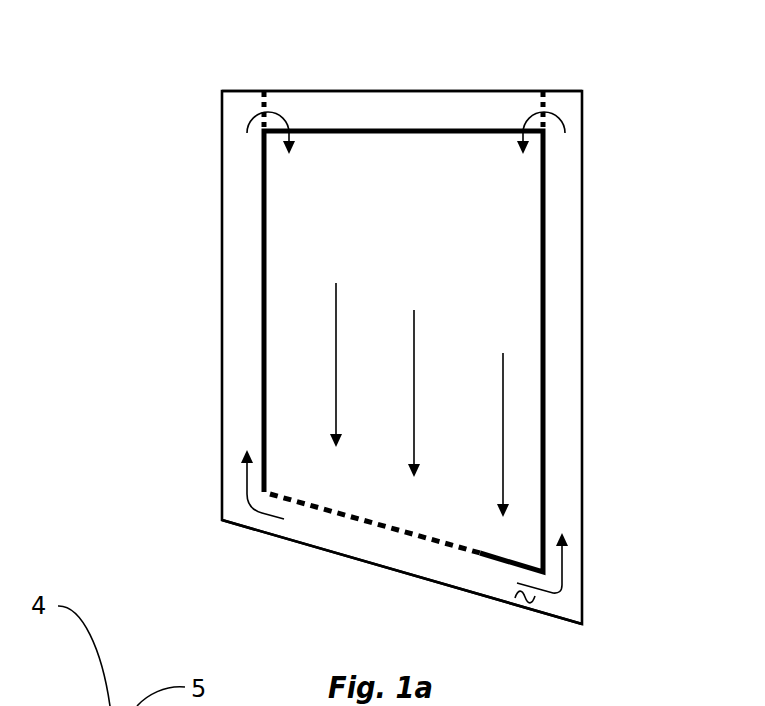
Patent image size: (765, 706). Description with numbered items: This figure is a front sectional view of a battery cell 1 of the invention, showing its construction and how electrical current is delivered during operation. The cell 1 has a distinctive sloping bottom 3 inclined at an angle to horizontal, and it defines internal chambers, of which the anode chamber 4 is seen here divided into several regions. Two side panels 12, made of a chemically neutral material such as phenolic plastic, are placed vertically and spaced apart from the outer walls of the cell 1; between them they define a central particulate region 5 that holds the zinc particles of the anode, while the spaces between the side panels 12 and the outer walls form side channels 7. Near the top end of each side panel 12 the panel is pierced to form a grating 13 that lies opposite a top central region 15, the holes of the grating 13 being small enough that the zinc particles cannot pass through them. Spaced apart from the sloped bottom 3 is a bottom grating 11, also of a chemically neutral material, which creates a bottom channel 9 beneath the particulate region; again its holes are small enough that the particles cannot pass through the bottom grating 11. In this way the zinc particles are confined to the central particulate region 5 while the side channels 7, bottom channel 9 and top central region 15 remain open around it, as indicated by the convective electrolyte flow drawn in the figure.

The cell 1 is at (134, 267).
The sloping bottom 3 is at (290, 543).
The anode chamber 4 is at (467, 106).
The central particulate region 5 is at (336, 170).
The side channels 7 is at (252, 398).
The bottom channel 9 is at (522, 600).
The bottom grating 11 is at (403, 533).
The side panels 12 is at (262, 229).
The grating 13 is at (263, 107).
The top central region 15 is at (347, 108).